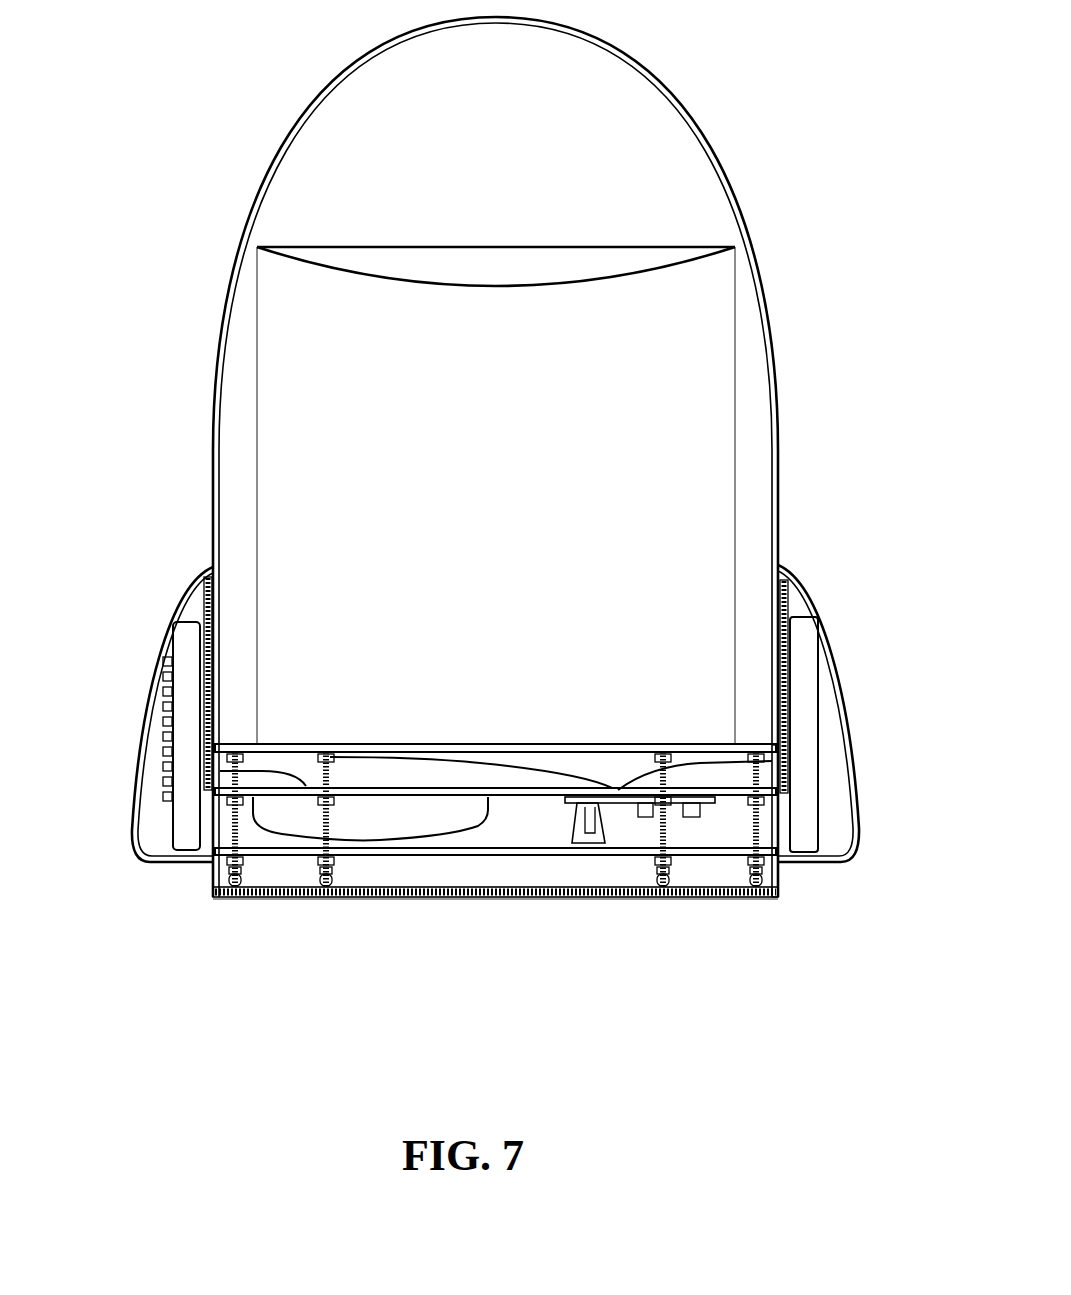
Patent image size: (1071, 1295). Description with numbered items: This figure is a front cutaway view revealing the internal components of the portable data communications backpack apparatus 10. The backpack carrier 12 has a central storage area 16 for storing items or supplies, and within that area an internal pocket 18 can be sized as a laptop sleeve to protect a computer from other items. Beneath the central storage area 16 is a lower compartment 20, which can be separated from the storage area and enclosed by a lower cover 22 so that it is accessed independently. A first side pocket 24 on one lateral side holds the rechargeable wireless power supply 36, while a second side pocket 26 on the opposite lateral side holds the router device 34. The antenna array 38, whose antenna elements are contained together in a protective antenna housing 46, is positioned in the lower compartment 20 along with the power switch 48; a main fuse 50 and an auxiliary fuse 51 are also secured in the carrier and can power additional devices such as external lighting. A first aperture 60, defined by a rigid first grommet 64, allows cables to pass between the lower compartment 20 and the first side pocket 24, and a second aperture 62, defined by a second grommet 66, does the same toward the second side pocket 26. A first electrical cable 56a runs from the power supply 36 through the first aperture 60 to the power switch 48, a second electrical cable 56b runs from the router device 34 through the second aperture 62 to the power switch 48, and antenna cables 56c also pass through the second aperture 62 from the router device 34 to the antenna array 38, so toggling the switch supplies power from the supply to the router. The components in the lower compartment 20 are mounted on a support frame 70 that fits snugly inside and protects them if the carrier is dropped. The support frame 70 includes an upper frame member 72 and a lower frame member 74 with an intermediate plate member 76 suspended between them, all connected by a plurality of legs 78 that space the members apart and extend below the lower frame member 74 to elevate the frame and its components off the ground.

The portable data communications backpack apparatus 10 is at (772, 137).
The backpack carrier 12 is at (638, 76).
The central storage area 16 is at (460, 400).
The internal pocket 18 is at (652, 255).
The lower compartment 20 is at (557, 885).
The lower cover 22 is at (260, 897).
The first side pocket 24 is at (785, 585).
The second side pocket 26 is at (207, 592).
The router device 34 is at (186, 650).
The rechargeable wireless power supply 36 is at (805, 643).
The antenna array 38 is at (415, 850).
The antenna housing 46 is at (370, 820).
The power switch 48 is at (605, 835).
The main fuse 50 is at (647, 817).
The auxiliary fuse 51 is at (698, 813).
The first electrical cable 56a is at (703, 772).
The second electrical cable 56b is at (388, 768).
The antenna cable 56c is at (275, 770).
The first aperture 60 is at (790, 777).
The second aperture 62 is at (240, 797).
The first grommet 64 is at (790, 760).
The second grommet 66 is at (216, 764).
The support frame 70 is at (527, 752).
The upper frame member 72 is at (567, 753).
The lower frame member 74 is at (262, 857).
The intermediate plate member 76 is at (620, 786).
The legs 78 is at (222, 880).